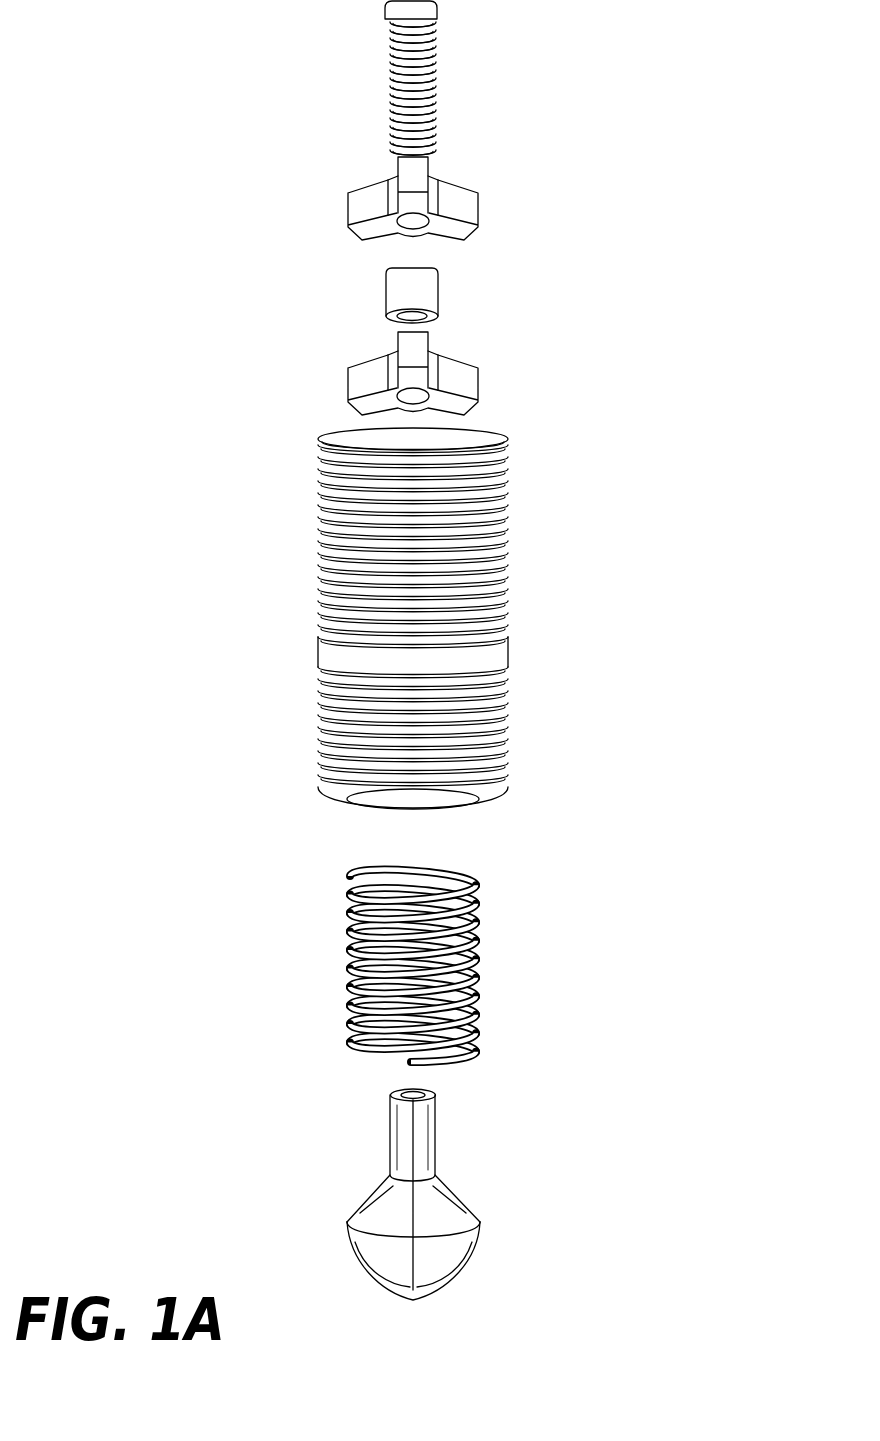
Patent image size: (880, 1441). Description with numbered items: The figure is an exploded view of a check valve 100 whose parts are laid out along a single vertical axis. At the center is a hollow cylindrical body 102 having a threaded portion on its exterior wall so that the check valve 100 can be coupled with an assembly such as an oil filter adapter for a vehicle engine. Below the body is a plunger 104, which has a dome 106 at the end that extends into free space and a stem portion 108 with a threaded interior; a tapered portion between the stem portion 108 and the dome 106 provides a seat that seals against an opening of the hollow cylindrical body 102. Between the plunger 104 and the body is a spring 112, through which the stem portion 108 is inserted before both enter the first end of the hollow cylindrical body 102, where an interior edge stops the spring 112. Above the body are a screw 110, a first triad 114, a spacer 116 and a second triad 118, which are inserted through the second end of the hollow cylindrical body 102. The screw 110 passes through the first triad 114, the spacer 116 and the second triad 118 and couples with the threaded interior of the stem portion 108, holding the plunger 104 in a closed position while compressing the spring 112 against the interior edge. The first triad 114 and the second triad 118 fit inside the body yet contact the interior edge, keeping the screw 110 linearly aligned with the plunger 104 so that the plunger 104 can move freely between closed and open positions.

The check valve 100 is at (316, 58).
The hollow cylindrical body 102 is at (318, 479).
The plunger 104 is at (387, 1231).
The dome 106 is at (433, 1290).
The stem portion 108 is at (435, 1130).
The screw 110 is at (438, 10).
The spring 112 is at (474, 941).
The first triad 114 is at (462, 208).
The spacer 116 is at (425, 289).
The second triad 118 is at (462, 382).